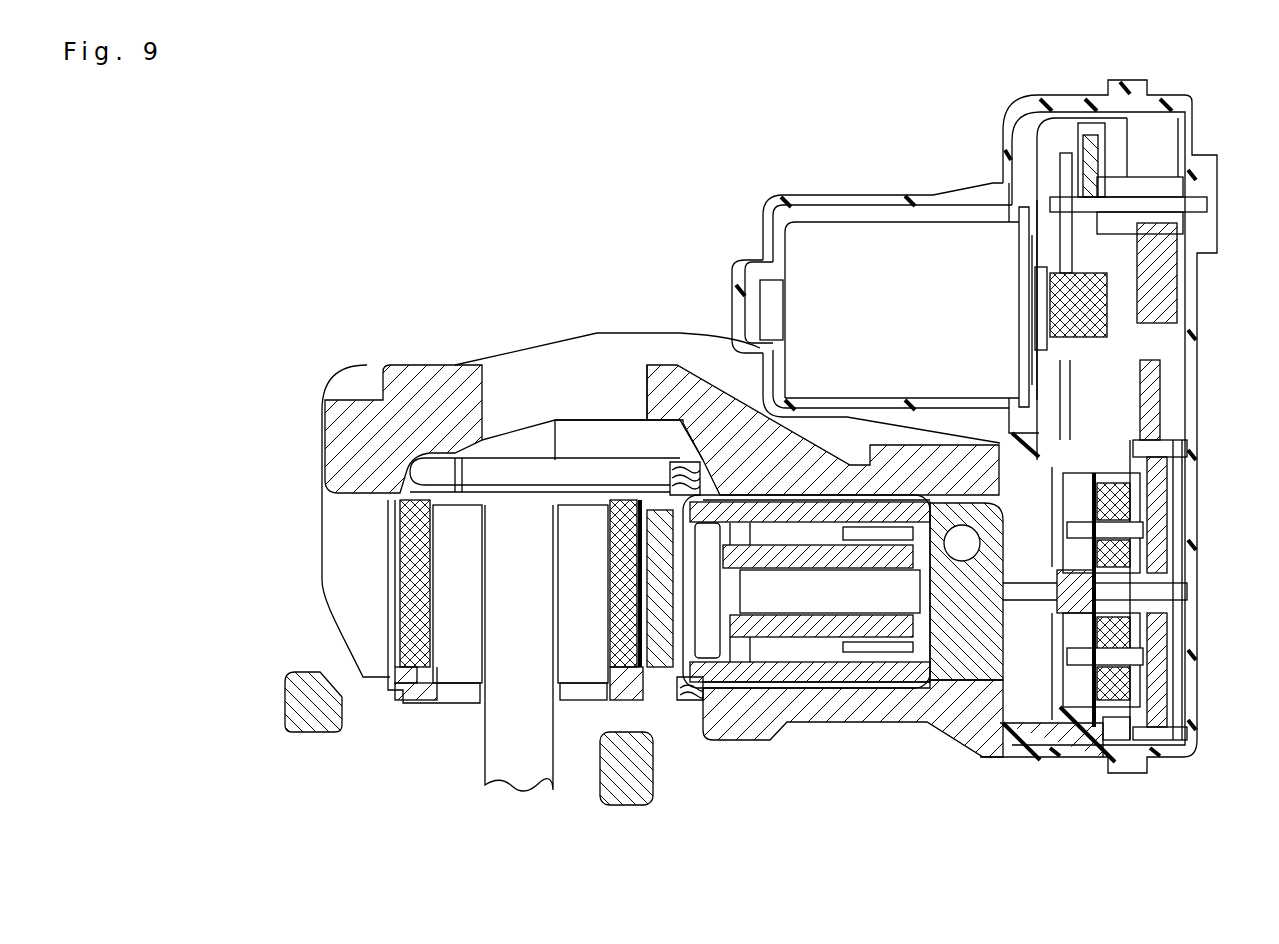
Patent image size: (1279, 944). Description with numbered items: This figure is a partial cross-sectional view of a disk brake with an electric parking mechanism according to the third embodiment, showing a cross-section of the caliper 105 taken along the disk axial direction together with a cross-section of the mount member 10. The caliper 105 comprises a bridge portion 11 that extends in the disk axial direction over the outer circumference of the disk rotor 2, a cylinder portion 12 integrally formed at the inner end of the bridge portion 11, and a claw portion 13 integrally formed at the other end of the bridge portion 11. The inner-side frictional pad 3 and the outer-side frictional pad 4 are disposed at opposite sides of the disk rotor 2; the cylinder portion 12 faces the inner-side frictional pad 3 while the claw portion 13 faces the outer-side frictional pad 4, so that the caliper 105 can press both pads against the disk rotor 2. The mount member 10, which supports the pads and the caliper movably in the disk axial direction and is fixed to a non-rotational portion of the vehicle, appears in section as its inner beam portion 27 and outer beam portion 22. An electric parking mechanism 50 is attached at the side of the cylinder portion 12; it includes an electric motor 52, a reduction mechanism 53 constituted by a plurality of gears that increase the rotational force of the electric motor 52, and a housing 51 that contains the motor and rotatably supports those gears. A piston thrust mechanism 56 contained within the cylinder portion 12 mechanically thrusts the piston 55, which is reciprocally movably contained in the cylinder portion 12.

The caliper 105 is at (693, 210).
The electric motor 52 is at (808, 232).
The reduction mechanism 53 is at (1185, 96).
The bridge portion 11 is at (690, 378).
The claw portion 13 is at (332, 533).
The outer beam portion 22 is at (315, 718).
The outer-side frictional pad 4 is at (432, 692).
The disk rotor 2 is at (503, 768).
The inner-side frictional pad 3 is at (583, 668).
The inner beam portion 27 is at (602, 800).
The piston 55 is at (662, 665).
The mount member 10 is at (640, 817).
The piston thrust mechanism 56 is at (807, 695).
The cylinder portion 12 is at (887, 712).
The housing 51 is at (1200, 735).
The electric parking mechanism 50 is at (1152, 787).